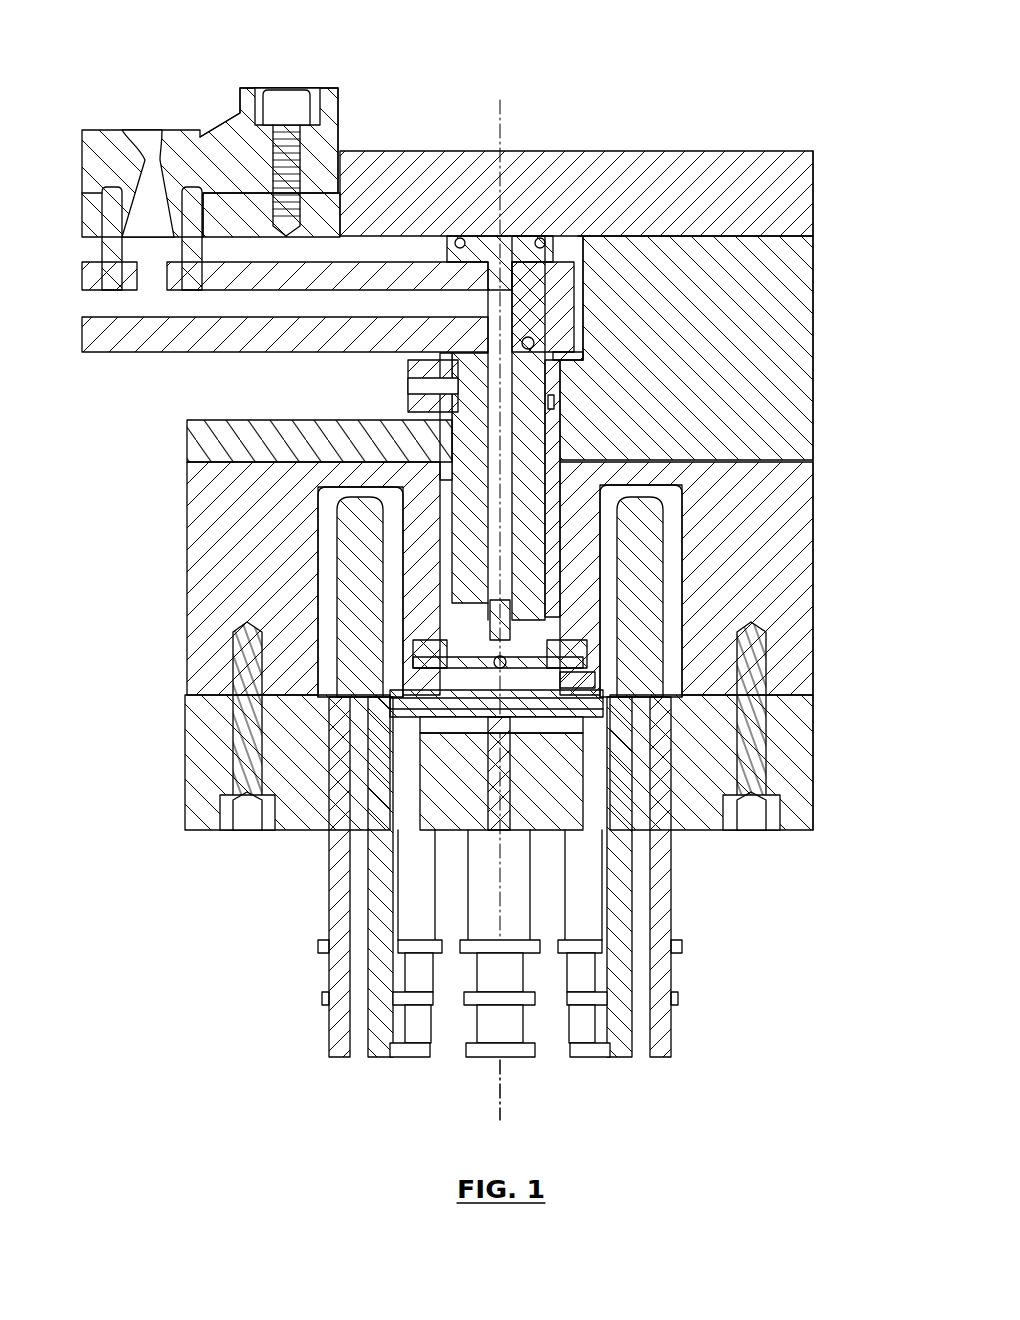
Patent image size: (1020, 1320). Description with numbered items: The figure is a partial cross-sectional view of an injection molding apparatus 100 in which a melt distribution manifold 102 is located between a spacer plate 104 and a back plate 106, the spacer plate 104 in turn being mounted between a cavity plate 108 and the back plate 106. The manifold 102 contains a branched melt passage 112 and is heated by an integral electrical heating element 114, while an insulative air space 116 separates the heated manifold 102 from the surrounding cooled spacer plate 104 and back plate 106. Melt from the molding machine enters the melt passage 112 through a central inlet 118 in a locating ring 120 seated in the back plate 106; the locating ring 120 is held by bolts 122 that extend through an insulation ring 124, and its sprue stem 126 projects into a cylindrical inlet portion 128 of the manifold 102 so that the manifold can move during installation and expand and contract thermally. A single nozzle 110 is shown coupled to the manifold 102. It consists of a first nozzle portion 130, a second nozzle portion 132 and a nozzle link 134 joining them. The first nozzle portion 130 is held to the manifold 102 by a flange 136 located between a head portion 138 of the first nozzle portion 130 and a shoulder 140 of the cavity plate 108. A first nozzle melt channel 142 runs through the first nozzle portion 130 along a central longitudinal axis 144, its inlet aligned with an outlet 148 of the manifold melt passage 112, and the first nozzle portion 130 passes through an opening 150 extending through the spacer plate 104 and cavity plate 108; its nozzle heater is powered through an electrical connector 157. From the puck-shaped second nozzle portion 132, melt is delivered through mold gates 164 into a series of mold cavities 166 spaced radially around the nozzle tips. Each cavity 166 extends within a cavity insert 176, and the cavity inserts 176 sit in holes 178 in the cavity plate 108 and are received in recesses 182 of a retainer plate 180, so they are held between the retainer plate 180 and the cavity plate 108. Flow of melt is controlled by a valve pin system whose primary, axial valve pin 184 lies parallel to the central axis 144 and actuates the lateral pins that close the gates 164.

The injection molding apparatus 100 is at (836, 192).
The melt distribution manifold 102 is at (452, 215).
The spacer plate 104 is at (783, 378).
The back plate 106 is at (770, 185).
The cavity plate 108 is at (790, 575).
The nozzle 110 is at (650, 520).
The branched melt passage 112 is at (150, 318).
The integral electrical heating element 114 is at (562, 315).
The insulative air space 116 is at (423, 273).
The central inlet 118 is at (153, 135).
The locating ring 120 is at (248, 88).
The bolts 122 is at (282, 105).
The insulation ring 124 is at (392, 230).
The sprue stem 126 is at (120, 187).
The cylindrical inlet portion 128 is at (113, 243).
The first nozzle portion 130 is at (590, 455).
The second nozzle portion 132 is at (470, 688).
The nozzle link 134 is at (485, 650).
The flange 136 is at (560, 400).
The head portion 138 is at (600, 325).
The shoulder 140 is at (560, 500).
The first nozzle melt channel 142 is at (440, 440).
The central longitudinal axis 144 is at (502, 1078).
The outlet 148 is at (486, 350).
The opening 150 is at (480, 607).
The electrical connector 157 is at (420, 400).
The mold gates 164 is at (385, 705).
The mold cavities 166 is at (620, 650).
The cavity insert 176 is at (680, 600).
The holes 178 is at (575, 555).
The retainer plate 180 is at (790, 755).
The recesses 182 is at (700, 712).
The axial valve pin 184 is at (510, 820).